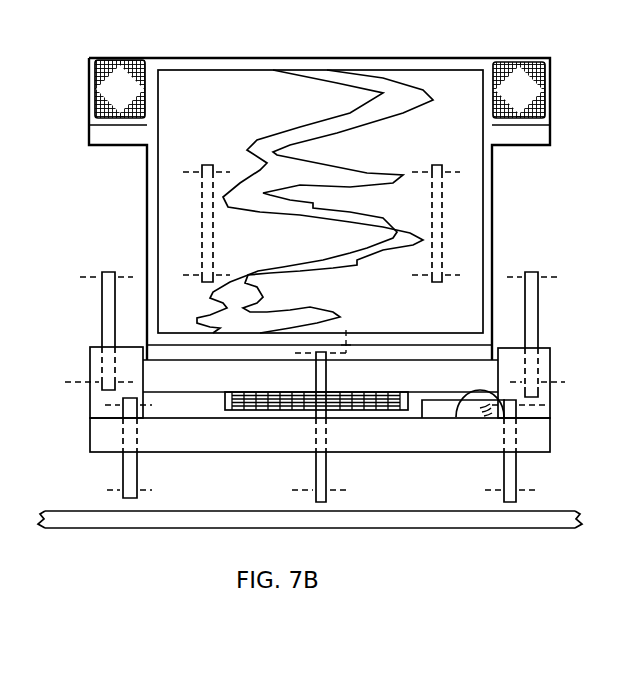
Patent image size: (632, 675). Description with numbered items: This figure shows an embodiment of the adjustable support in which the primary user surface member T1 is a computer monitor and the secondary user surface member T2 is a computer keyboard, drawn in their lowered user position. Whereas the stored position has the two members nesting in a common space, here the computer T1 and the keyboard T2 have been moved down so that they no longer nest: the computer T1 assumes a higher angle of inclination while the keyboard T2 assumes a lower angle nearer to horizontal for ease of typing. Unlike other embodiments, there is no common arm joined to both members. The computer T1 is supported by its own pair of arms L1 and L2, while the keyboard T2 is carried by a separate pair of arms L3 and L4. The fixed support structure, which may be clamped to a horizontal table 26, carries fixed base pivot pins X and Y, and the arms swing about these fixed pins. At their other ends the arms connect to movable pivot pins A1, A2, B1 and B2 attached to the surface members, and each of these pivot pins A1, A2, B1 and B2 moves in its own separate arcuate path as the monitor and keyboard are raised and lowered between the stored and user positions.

The primary user surface member T1 is at (378, 58).
The pivot pin B1 is at (228, 170).
The arm L2 is at (214, 252).
The fixed base pivot pin Y is at (198, 273).
The arm L4 is at (102, 314).
The pivot pin B2 is at (80, 381).
The pivot pin A2 is at (107, 410).
The secondary user surface member T2 is at (550, 403).
The arm L1 is at (326, 478).
The pivot pin A1 is at (346, 330).
The arm L3 is at (137, 472).
The fixed base pivot pin X is at (118, 490).
The horizontal table 26 is at (60, 510).